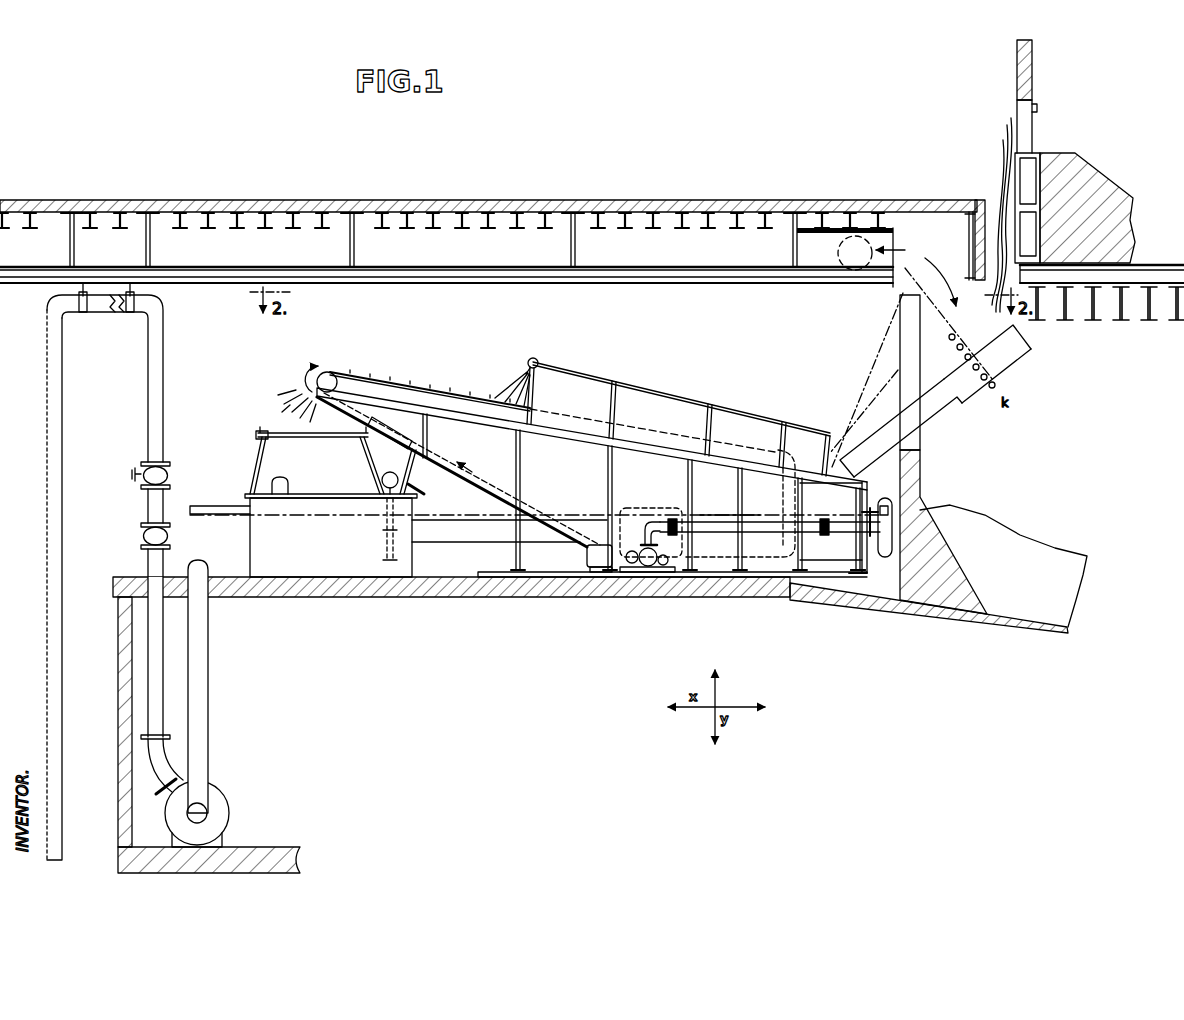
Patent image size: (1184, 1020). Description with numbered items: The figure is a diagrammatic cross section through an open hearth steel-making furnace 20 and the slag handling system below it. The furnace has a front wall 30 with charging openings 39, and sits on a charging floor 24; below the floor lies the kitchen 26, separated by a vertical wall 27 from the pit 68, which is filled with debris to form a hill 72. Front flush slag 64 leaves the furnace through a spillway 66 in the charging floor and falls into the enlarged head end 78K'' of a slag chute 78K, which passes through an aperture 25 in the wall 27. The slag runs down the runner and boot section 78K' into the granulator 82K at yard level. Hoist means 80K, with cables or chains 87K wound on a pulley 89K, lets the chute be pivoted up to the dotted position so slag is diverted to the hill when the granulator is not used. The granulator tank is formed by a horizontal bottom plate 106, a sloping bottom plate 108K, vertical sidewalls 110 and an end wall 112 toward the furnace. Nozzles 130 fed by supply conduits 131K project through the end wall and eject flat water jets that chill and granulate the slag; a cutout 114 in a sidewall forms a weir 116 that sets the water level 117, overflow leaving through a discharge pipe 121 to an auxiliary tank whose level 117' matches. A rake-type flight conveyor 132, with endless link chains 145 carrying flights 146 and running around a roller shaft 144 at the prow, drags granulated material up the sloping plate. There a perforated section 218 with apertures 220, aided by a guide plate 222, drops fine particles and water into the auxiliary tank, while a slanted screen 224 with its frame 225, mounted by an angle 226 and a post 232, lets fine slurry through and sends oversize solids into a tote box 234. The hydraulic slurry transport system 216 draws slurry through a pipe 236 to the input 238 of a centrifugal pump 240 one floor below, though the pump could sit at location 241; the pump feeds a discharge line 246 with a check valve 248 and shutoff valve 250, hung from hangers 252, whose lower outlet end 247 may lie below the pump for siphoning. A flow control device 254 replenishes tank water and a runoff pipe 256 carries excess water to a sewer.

The open hearth steel-making furnace 20 is at (1007, 120).
The charging floor 24 is at (856, 200).
The aperture 25 is at (921, 450).
The kitchen 26 is at (587, 466).
The vertical wall 27 is at (921, 490).
The front wall 30 is at (1017, 60).
The charging opening 39 is at (1037, 108).
The front flush slag 64 is at (1004, 162).
The spillway 66 is at (999, 196).
The pit 68 is at (1003, 563).
The hill 72 is at (1074, 566).
The slag chute 78K is at (951, 372).
The runner and boot section 78K' is at (915, 437).
The head end 78K'' is at (1008, 357).
The hoist means 80K is at (916, 273).
The granulator 82K is at (672, 410).
The cables or chains 87K is at (958, 348).
The pulley 89K is at (846, 252).
The bottom plate 106 is at (743, 579).
The sloping bottom plate 108K is at (466, 494).
The sidewall 110 is at (592, 480).
The end wall 112 is at (872, 562).
The cutout 114 is at (655, 508).
The weir 116 is at (626, 508).
The water level 117 is at (730, 499).
The water level 117' is at (300, 490).
The discharge pipe 121 is at (466, 540).
The nozzle 130 is at (876, 498).
The supply conduit 131K is at (790, 521).
The rake-type flight conveyor 132 is at (433, 371).
The roller shaft 144 is at (326, 371).
The endless link chains 145 is at (498, 395).
The flights 146 is at (404, 382).
The hydraulic granulated slag slurry transport system 216 is at (175, 496).
The perforated section 218 is at (406, 450).
The apertures 220 is at (862, 512).
The plate 222 is at (419, 489).
The slanted screen 224 is at (298, 443).
The frame 225 is at (256, 437).
The angle 226 is at (369, 450).
The post 232 is at (265, 457).
The tote box 234 is at (340, 582).
The pipe 236 is at (206, 627).
The input 238 is at (229, 813).
The centrifugal pump 240 is at (223, 797).
The alternative pump location 241 is at (170, 575).
The discharge line 246 is at (148, 380).
The lower outlet end 247 is at (62, 836).
The check valve 248 is at (141, 537).
The shutoff valve 250 is at (135, 474).
The hangers 252 is at (128, 290).
The flow control device 254 is at (380, 482).
The runoff pipe 256 is at (236, 516).